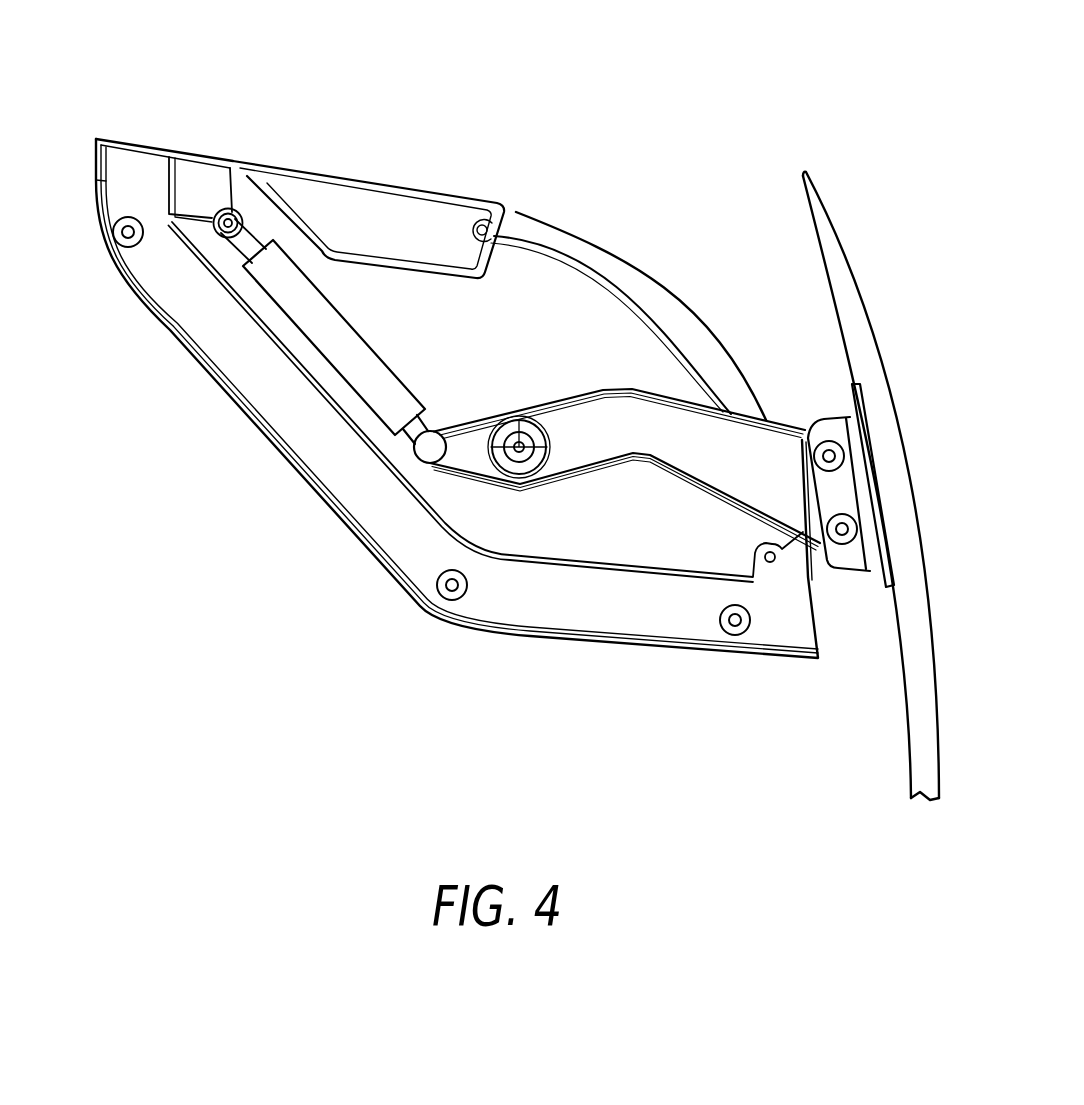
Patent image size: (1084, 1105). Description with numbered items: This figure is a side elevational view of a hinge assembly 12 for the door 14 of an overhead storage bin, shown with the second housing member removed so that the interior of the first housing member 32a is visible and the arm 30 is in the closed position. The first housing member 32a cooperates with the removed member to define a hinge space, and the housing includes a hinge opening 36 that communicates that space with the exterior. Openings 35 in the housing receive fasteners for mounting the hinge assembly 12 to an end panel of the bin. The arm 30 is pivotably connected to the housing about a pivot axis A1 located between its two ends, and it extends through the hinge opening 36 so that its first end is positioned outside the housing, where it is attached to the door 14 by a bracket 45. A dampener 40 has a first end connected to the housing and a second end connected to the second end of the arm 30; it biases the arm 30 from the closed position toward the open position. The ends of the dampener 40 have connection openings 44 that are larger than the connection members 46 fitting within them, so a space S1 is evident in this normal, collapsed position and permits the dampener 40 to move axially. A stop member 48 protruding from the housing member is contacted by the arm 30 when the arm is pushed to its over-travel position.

The hinge assembly 12 is at (706, 116).
The door 14 is at (845, 262).
The arm 30 is at (740, 448).
The first housing member 32a is at (573, 244).
The openings 35 is at (128, 232).
The hinge opening 36 is at (682, 299).
The dampener 40 is at (343, 367).
The connection opening 44 is at (224, 227).
The bracket 45 is at (848, 560).
The connection member 46 is at (226, 238).
The stop member 48 is at (518, 214).
The pivot axis A1 is at (519, 450).
The space S1 is at (231, 211).